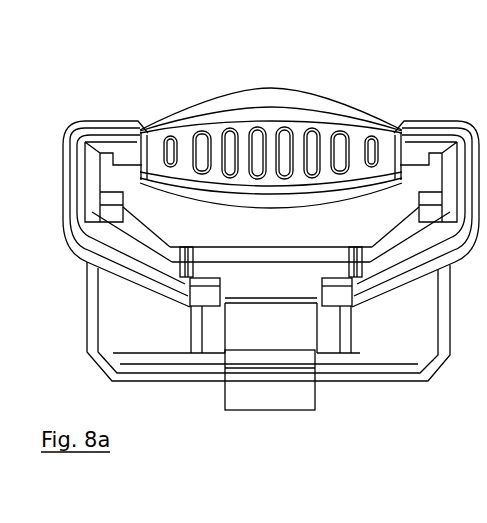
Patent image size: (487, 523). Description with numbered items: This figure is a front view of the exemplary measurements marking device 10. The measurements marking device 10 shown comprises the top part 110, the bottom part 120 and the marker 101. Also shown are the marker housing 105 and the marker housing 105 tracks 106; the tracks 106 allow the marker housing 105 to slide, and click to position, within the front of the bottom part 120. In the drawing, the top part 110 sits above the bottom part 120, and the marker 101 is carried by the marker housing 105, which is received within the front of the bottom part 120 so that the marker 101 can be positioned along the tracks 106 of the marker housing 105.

The measurements marking device 10 is at (186, 76).
The marker 101 is at (270, 413).
The marker housing 105 is at (215, 337).
The marker housing tracks 106 is at (213, 305).
The top part 110 is at (382, 115).
The bottom part 120 is at (376, 388).